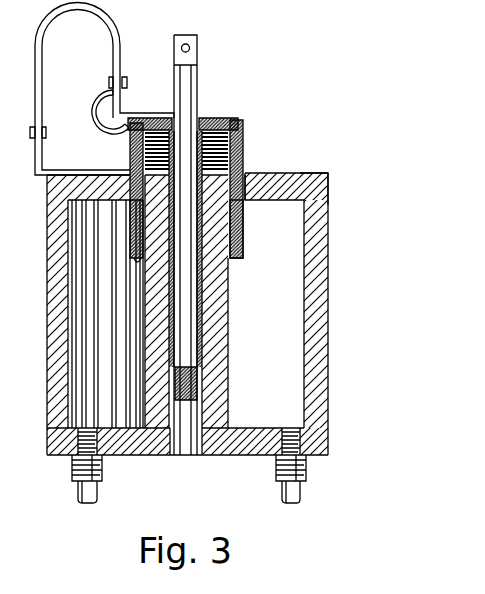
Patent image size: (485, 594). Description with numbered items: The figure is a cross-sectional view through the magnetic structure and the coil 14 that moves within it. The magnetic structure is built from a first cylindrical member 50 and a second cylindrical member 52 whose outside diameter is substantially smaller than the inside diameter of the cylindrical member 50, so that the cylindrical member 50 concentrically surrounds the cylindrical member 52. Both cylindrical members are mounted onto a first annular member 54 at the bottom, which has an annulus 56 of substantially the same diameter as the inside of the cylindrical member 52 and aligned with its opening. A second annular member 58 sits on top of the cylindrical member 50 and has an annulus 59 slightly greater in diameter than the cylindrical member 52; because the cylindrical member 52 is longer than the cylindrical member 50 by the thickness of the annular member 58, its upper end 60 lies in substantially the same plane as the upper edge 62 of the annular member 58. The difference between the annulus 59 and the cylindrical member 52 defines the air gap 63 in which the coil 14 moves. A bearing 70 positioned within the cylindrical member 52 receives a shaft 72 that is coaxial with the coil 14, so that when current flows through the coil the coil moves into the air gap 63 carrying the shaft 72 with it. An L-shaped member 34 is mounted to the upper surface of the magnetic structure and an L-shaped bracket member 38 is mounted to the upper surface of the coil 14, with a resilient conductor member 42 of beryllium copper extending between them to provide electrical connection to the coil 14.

The coil 14 is at (243, 126).
The L-shaped member 34 is at (40, 155).
The L-shaped bracket member 38 is at (127, 106).
The resilient conductor member 42 is at (119, 35).
The first cylindrical member 50 is at (328, 304).
The second cylindrical member 52 is at (228, 303).
The first annular member 54 is at (328, 446).
The annulus 56 is at (178, 456).
The second annular member 58 is at (285, 173).
The annulus 59 is at (245, 173).
The upper end 60 is at (132, 158).
The upper edge 62 is at (318, 173).
The air gap 63 is at (243, 200).
The bearing 70 is at (203, 380).
The shaft 72 is at (197, 108).